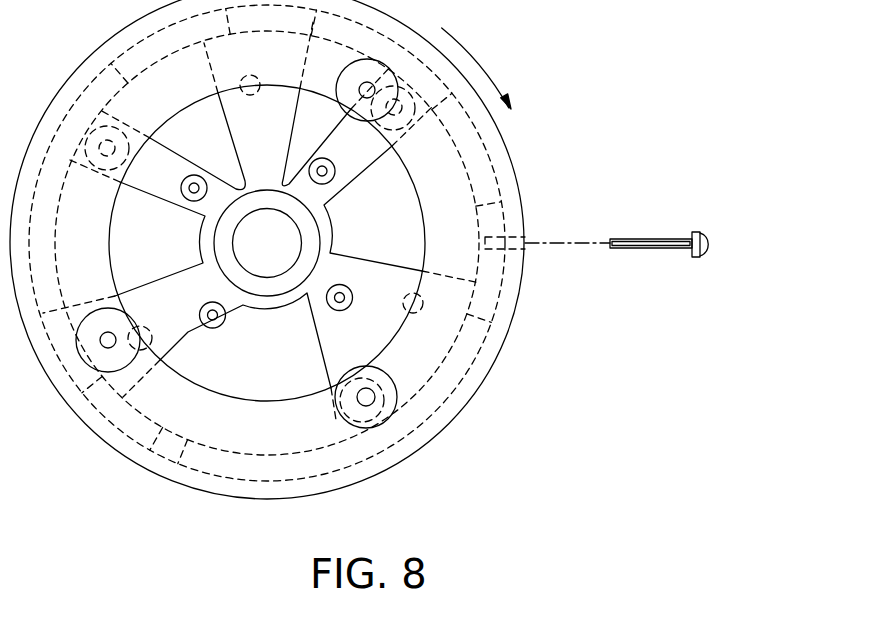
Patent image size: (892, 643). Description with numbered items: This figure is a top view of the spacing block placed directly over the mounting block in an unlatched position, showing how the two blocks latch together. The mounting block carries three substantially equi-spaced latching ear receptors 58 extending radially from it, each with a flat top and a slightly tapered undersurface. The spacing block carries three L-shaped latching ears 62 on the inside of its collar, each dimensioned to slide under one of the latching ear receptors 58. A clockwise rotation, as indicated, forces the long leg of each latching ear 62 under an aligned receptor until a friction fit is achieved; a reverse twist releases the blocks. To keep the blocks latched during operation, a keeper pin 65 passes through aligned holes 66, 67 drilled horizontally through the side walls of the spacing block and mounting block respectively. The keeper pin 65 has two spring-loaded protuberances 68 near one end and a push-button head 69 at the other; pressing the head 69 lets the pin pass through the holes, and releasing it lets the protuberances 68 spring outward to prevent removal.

The latching ear receptor 58 is at (494, 292).
The latching ear 62 is at (497, 222).
The keeper pin 65 is at (655, 232).
The hole 66 is at (502, 241).
The hole 67 is at (418, 313).
The spring-loaded protuberances 68 is at (614, 238).
The push-button head 69 is at (716, 234).